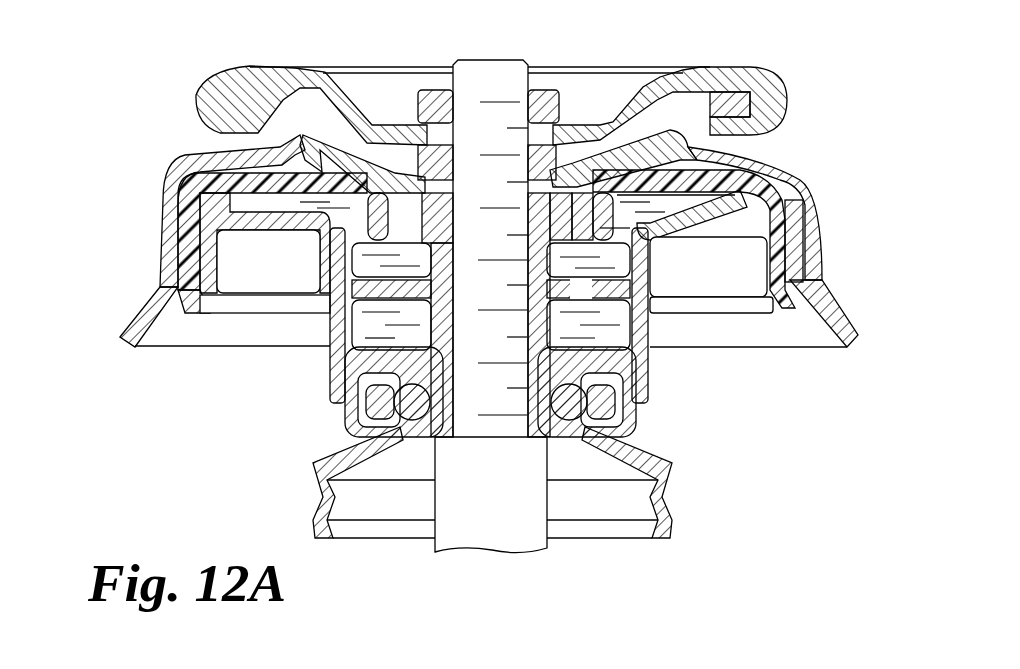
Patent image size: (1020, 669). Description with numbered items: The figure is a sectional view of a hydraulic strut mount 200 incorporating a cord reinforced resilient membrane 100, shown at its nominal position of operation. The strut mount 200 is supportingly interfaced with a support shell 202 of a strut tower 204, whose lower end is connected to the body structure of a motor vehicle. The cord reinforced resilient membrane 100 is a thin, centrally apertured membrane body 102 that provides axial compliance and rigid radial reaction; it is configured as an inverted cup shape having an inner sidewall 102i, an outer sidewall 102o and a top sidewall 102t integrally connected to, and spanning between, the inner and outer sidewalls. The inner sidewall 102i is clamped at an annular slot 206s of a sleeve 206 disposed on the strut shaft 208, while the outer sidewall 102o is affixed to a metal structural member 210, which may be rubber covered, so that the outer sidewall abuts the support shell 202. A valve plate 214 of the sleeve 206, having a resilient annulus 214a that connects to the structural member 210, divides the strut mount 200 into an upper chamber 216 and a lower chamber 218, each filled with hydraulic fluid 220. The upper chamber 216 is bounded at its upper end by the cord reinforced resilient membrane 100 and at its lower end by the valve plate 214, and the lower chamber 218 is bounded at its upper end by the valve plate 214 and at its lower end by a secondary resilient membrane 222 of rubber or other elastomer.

The cord reinforced resilient membrane 100 is at (262, 153).
The membrane body 102 is at (753, 170).
The top sidewall 102t is at (322, 173).
The inner sidewall 102i is at (395, 212).
The outer sidewall 102o is at (163, 277).
The hydraulic strut mount 200 is at (776, 400).
The support shell 202 is at (162, 200).
The strut tower 204 is at (178, 250).
The sleeve 206 is at (456, 340).
The annular slot 206s is at (400, 217).
The strut shaft 208 is at (549, 497).
The metal structural member 210 is at (657, 240).
The valve plate 214 is at (373, 345).
The resilient annulus 214a is at (385, 325).
The upper chamber 216 is at (345, 276).
The lower chamber 218 is at (400, 315).
The hydraulic fluid 220 is at (605, 263).
The bearing 222 is at (630, 415).